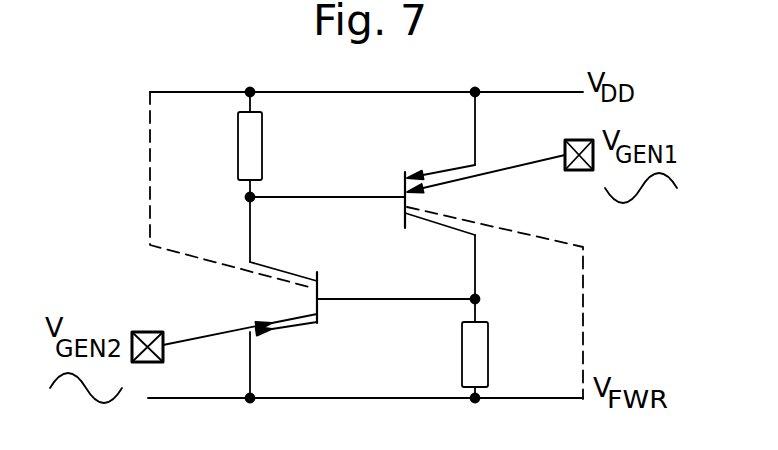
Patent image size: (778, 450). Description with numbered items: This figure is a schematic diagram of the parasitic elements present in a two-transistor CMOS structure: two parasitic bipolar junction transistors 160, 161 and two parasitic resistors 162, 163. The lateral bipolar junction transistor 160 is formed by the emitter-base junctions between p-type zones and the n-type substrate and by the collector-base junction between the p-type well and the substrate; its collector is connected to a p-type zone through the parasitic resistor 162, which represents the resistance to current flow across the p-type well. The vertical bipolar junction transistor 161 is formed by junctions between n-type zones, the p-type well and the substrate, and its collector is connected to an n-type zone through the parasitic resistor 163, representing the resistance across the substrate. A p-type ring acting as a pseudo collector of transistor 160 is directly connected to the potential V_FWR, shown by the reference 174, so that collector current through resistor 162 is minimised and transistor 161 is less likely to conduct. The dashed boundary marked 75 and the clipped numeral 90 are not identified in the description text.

The substrate region (dashed boundary) 75 is at (150, 175).
The partial reference numeral (clipped at sheet top) 90 is at (626, 6).
The lateral bipolar junction transistor 160 is at (403, 178).
The vertical bipolar junction transistor 161 is at (318, 282).
The parasitic resistor 162 is at (470, 350).
The parasitic resistor 163 is at (255, 131).
The pseudo collector connection to V_FWR 174 is at (583, 332).